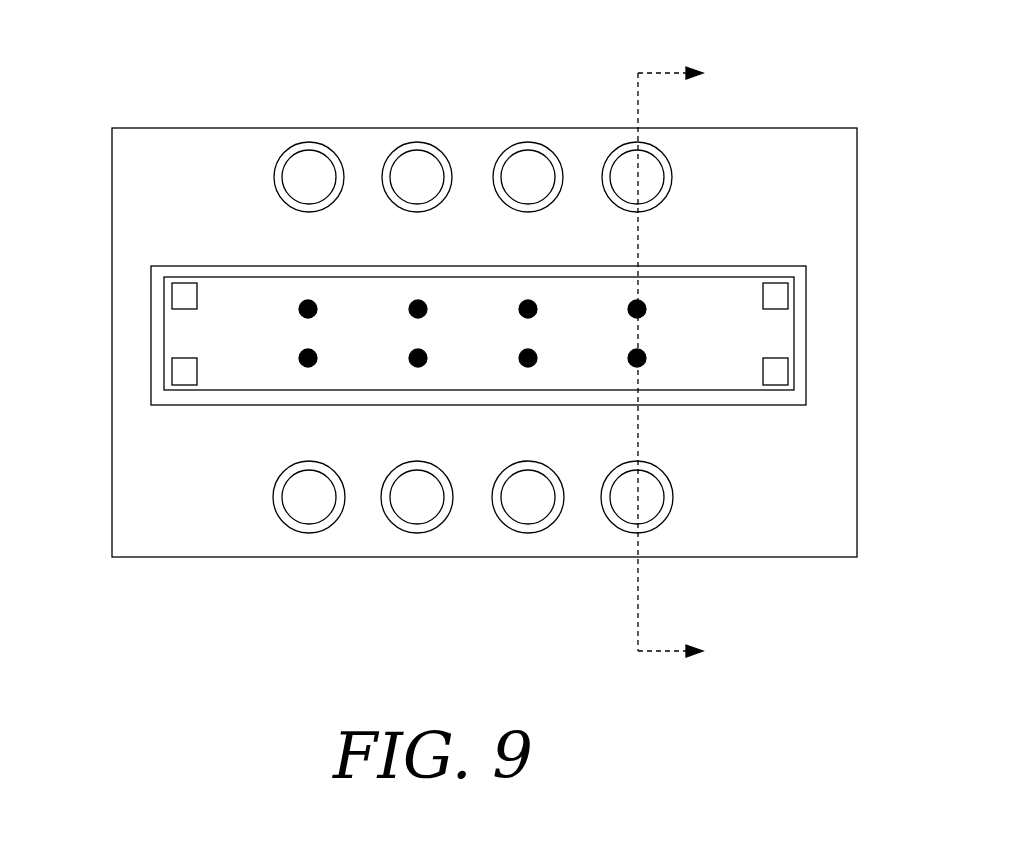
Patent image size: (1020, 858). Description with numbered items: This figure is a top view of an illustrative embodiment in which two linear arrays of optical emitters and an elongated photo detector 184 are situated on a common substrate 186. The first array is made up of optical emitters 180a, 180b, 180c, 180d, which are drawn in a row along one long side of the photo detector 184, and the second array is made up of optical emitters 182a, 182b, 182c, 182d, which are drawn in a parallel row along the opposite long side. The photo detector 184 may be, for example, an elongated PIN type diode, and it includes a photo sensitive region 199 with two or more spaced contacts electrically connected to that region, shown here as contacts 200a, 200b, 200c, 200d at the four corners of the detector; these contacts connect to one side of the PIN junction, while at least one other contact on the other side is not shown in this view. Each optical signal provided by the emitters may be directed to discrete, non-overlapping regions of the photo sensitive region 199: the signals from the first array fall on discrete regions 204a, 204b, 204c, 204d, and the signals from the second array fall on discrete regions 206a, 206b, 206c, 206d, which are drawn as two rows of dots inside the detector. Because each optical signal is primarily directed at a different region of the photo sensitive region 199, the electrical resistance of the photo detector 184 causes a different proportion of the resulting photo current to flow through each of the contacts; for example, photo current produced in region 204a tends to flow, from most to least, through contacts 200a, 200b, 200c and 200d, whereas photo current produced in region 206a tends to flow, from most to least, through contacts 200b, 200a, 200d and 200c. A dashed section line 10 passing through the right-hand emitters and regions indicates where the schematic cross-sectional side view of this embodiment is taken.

The common substrate 186 is at (146, 160).
The elongated photo detector 184 is at (727, 297).
The photo sensitive region 199 is at (381, 344).
The contact 200a is at (181, 298).
The contact 200b is at (181, 372).
The contact 200c is at (781, 292).
The contact 200d is at (781, 368).
The discrete region 204a is at (307, 300).
The discrete region 204b is at (417, 300).
The discrete region 204c is at (527, 300).
The discrete region 204d is at (638, 300).
The discrete region 206a is at (307, 367).
The discrete region 206b is at (417, 367).
The discrete region 206c is at (527, 367).
The discrete region 206d is at (636, 367).
The optical emitter 180a is at (306, 167).
The optical emitter 180b is at (413, 168).
The optical emitter 180c is at (525, 162).
The optical emitter 180d is at (628, 162).
The optical emitter 182a is at (309, 505).
The optical emitter 182b is at (417, 505).
The optical emitter 182c is at (528, 507).
The optical emitter 182d is at (635, 507).
The section line 10 is at (687, 365).